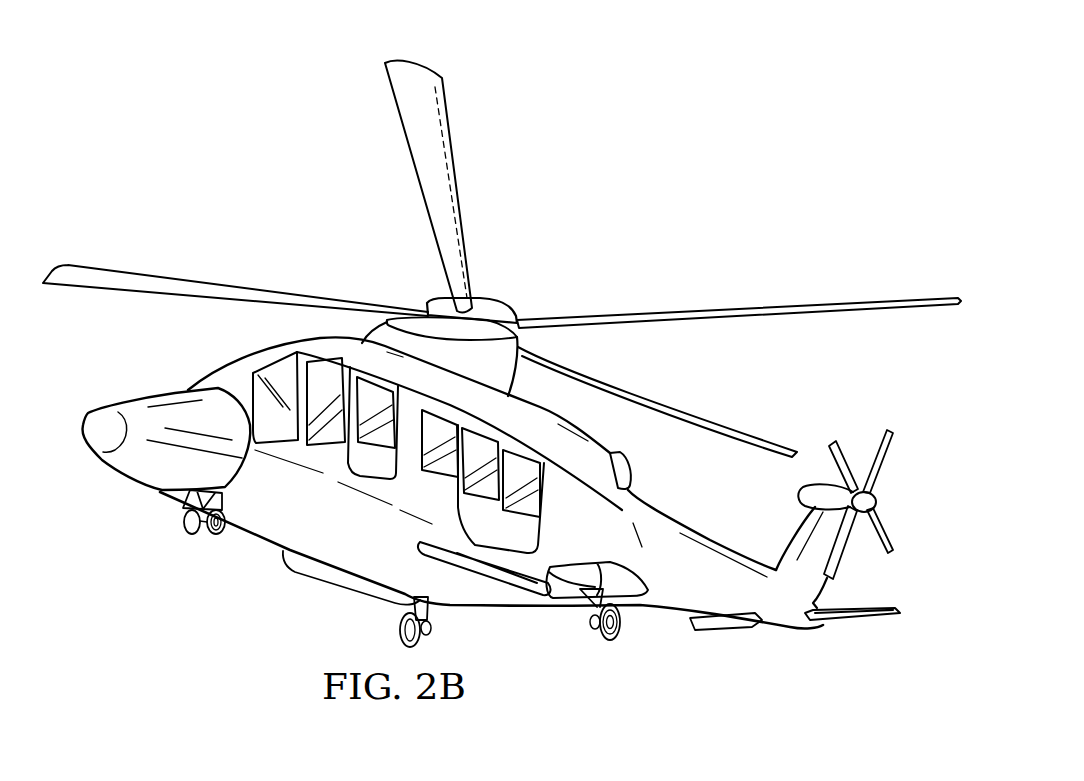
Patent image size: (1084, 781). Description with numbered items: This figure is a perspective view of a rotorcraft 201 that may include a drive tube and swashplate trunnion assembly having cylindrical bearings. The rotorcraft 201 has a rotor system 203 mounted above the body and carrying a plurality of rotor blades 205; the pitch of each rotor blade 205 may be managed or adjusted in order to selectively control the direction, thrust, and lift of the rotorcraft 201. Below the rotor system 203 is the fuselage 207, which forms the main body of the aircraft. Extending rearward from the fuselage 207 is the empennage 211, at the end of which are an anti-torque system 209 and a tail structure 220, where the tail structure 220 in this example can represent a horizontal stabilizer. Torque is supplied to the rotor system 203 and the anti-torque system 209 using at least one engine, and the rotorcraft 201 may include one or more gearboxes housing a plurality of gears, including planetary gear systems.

The rotorcraft 201 is at (224, 75).
The rotor system 203 is at (373, 230).
The rotor blade 205 is at (721, 322).
The fuselage 207 is at (283, 553).
The anti-torque system 209 is at (900, 412).
The empennage 211 is at (673, 600).
The tail structure 220 is at (858, 622).